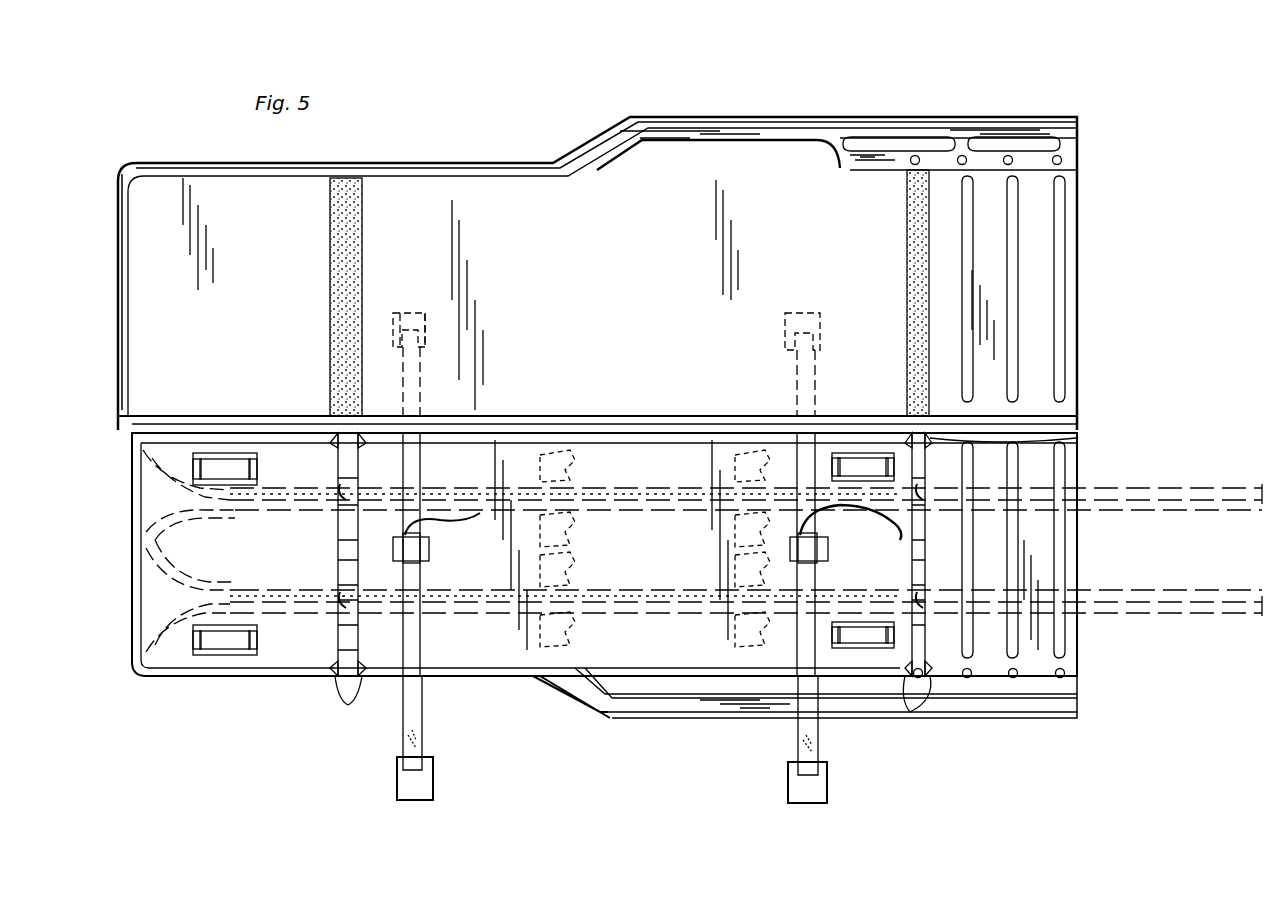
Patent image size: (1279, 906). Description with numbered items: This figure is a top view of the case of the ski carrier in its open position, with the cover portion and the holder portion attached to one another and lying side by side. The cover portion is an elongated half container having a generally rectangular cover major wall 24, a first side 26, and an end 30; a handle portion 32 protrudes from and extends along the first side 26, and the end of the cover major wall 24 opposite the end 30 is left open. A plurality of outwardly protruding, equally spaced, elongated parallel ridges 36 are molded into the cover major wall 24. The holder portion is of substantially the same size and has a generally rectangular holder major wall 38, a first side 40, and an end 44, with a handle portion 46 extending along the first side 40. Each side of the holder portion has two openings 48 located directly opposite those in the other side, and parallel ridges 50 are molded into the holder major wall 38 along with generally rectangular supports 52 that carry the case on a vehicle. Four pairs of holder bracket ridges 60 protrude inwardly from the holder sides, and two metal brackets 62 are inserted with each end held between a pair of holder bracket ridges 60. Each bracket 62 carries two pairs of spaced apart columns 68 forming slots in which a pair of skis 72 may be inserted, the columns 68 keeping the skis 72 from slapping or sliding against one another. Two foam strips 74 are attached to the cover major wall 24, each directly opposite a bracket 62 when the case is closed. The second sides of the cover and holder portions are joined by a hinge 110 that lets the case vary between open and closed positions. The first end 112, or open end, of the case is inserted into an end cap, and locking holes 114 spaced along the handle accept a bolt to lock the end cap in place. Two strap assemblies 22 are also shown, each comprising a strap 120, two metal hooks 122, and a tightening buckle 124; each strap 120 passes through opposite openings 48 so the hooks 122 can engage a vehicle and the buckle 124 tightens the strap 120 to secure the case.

The strap assembly 22 is at (397, 792).
The cover major wall 24 is at (398, 218).
The first side 26 is at (608, 170).
The end 30 is at (118, 262).
The handle portion 32 is at (695, 130).
The ridges 36 is at (470, 168).
The holder major wall 38 is at (490, 655).
The first side 40 is at (585, 692).
The end 44 is at (132, 582).
The handle portion 46 is at (700, 705).
The openings 48 is at (425, 416).
The ridges 50 is at (1012, 535).
The supports 52 is at (235, 468).
The holder bracket ridges 60 is at (338, 448).
The brackets 62 is at (338, 562).
The columns 68 is at (338, 490).
The skis 72 is at (1160, 512).
The foam strips 74 is at (330, 218).
The hinge 110 is at (1065, 405).
The first end 112 is at (1010, 100).
The locking holes 114 is at (1058, 164).
The strap 120 is at (418, 360).
The hooks 122 is at (405, 312).
The tightening buckle 124 is at (430, 552).